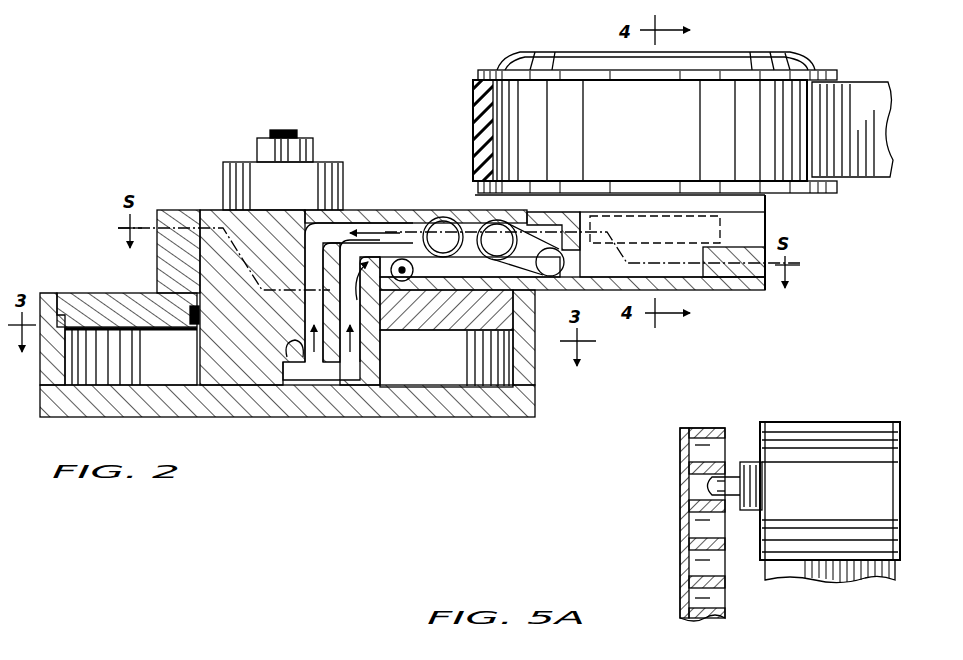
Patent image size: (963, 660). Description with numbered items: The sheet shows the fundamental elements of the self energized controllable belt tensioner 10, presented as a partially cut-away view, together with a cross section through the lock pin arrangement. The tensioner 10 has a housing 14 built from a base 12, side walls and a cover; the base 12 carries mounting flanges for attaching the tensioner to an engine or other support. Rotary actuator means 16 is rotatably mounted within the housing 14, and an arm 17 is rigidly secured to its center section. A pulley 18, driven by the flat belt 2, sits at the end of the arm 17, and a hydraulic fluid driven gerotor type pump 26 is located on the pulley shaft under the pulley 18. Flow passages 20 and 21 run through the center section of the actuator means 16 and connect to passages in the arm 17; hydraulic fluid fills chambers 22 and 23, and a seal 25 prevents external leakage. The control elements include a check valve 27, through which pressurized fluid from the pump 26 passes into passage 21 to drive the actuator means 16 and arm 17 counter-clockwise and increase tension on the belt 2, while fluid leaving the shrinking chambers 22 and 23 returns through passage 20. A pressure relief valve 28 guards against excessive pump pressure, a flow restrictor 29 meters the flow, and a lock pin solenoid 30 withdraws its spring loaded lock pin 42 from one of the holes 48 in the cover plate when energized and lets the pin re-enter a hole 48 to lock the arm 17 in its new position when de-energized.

In FIG. 2, the flat belt 2 is at (857, 180).
In FIG. 2, the tensioner 10 is at (185, 160).
In FIG. 2, the base 12 is at (418, 398).
In FIG. 2, the housing 14 is at (332, 368).
In FIG. 2, the actuator means 16 is at (235, 368).
In FIG. 2, the arm 17 is at (722, 285).
In FIG. 2, the pulley 18 is at (775, 58).
In FIG. 2, the flow passage 20 is at (388, 352).
In FIG. 2, the flow passage 21 is at (285, 382).
In FIG. 2, the chamber 22 is at (480, 388).
In FIG. 2, the chamber 23 is at (168, 372).
In FIG. 2, the seal 25 is at (200, 312).
In FIG. 2, the gerotor type pump 26 is at (738, 228).
In FIG. 2, the check valve 27 is at (445, 216).
In FIG. 2, the pressure relief valve 28 is at (508, 212).
In FIG. 2, the flow restrictor 29 is at (415, 270).
In FIG. 2, the lock pin solenoid 30 is at (345, 190).
In FIG. 5A, the lock pin solenoid 30 is at (808, 440).
In FIG. 5A, the lock pin 42 is at (735, 472).
In FIG. 5A, the holes 48 is at (690, 548).